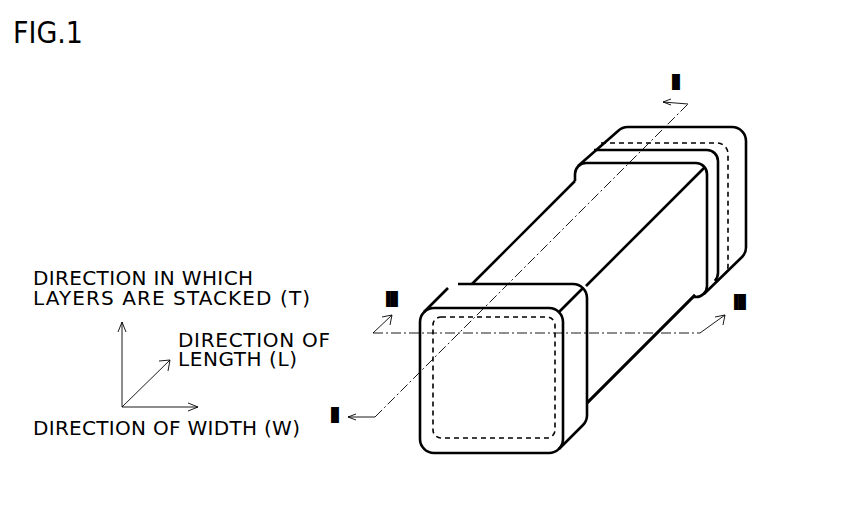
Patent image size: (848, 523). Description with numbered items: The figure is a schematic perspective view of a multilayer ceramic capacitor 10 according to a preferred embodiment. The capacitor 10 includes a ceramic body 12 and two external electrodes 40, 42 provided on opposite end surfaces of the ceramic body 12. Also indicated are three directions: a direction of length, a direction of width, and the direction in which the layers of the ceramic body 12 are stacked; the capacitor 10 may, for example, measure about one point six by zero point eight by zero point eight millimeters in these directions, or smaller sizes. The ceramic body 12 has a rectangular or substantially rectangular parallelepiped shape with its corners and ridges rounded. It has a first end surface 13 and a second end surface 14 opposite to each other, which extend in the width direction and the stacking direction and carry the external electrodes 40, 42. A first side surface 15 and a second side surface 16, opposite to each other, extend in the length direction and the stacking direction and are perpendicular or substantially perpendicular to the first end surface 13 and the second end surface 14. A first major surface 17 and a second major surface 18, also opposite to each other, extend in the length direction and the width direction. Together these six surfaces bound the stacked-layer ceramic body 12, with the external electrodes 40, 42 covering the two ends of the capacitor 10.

The multilayer ceramic capacitor 10 is at (421, 182).
The ceramic body 12 is at (531, 209).
The first end surface 13 is at (494, 424).
The second end surface 14 is at (630, 143).
The first side surface 15 is at (623, 345).
The second side surface 16 is at (517, 268).
The first major surface 17 is at (565, 207).
The second major surface 18 is at (602, 355).
The external electrode 40 is at (568, 407).
The external electrode 42 is at (740, 186).